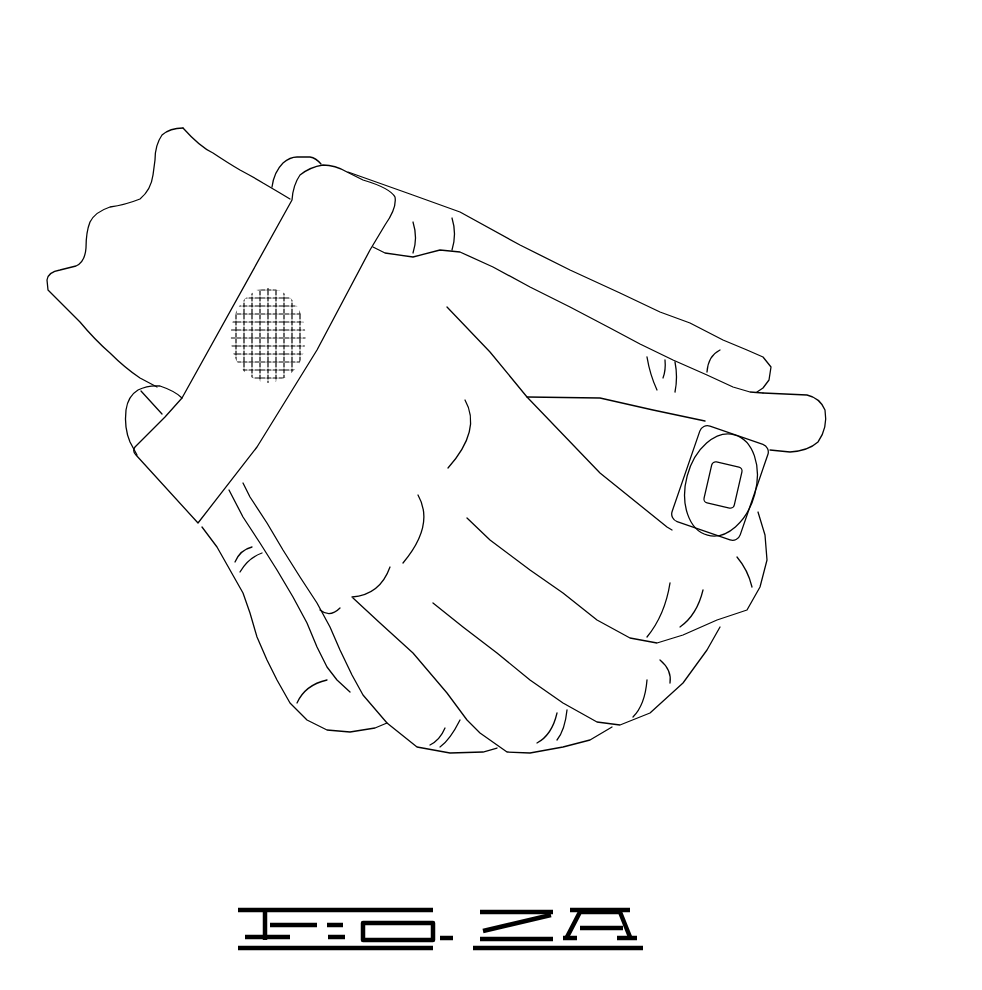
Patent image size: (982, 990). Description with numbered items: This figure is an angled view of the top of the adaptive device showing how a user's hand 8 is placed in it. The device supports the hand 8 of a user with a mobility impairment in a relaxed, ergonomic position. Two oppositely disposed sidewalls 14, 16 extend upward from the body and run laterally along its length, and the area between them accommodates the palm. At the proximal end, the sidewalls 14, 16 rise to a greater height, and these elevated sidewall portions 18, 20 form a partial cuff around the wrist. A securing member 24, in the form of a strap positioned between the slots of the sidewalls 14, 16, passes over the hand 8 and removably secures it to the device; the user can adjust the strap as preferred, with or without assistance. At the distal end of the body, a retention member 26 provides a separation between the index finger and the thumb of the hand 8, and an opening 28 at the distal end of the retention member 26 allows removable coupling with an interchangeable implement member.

The hand 8 is at (565, 662).
The sidewall 14 is at (615, 292).
The sidewall 16 is at (282, 642).
The elevated sidewall portion 18 is at (287, 173).
The elevated sidewall portion 20 is at (140, 417).
The securing member 24 is at (328, 227).
The retention member 26 is at (650, 467).
The opening 28 is at (788, 504).